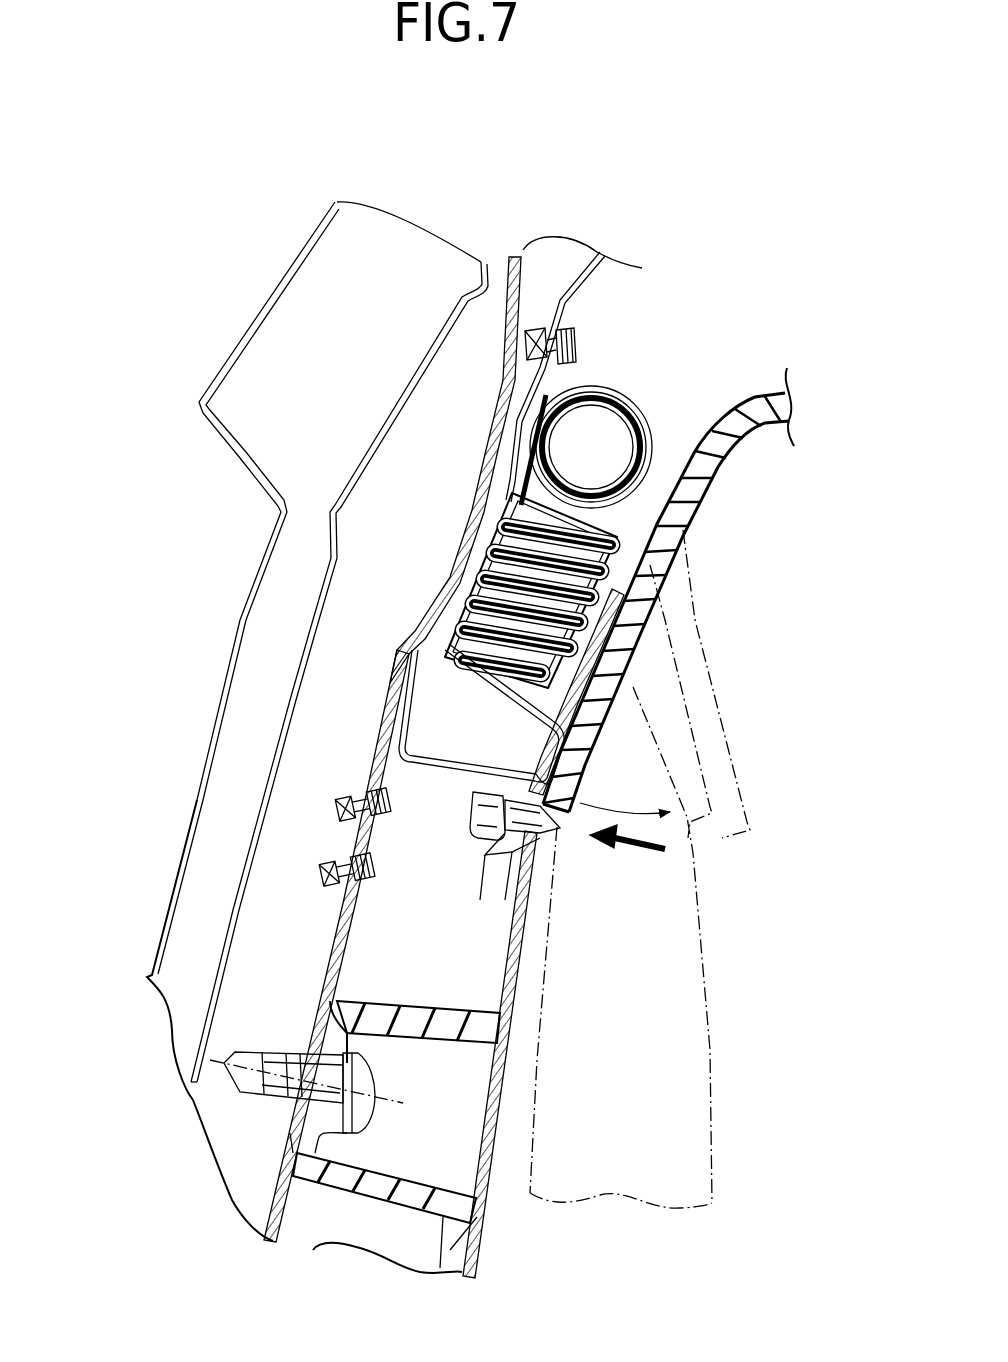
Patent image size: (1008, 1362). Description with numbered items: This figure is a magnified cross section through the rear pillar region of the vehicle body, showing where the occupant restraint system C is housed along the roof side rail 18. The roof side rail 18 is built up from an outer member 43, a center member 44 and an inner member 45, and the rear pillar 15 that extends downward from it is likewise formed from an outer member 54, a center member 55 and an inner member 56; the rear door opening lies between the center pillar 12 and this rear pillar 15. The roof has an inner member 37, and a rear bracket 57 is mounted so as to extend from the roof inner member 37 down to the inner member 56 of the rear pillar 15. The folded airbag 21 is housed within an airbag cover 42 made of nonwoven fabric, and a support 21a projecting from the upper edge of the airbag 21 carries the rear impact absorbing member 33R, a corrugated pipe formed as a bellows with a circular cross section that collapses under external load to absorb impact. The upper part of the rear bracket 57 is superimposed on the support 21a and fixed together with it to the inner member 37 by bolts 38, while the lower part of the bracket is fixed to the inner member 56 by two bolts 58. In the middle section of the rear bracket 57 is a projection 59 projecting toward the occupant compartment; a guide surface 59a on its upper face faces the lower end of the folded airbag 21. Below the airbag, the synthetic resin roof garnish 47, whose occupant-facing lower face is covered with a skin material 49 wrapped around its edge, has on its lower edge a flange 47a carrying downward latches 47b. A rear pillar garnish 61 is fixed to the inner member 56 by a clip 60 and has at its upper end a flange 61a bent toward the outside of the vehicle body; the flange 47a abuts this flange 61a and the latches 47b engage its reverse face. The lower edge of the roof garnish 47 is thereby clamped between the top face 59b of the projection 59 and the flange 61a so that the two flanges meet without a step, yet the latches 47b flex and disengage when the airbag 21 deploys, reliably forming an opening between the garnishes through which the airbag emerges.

The center pillar 12 is at (645, 839).
The rear pillar 15 is at (220, 702).
The roof side rail 18 is at (280, 262).
The airbag 21 is at (606, 531).
The support 21a is at (642, 412).
The impact absorbing member 33R is at (549, 418).
The inner member of roof 37 is at (556, 247).
The bolts 38 is at (578, 344).
The airbag cover 42 is at (556, 728).
The outer member of roof side rail 43 is at (268, 300).
The center member of roof side rail 44 is at (415, 360).
The inner member of roof side rail 45 is at (503, 377).
The roof garnish 47 is at (760, 420).
The flange of roof garnish 47a is at (560, 828).
The latches 47b is at (476, 815).
The skin material 49 is at (600, 693).
The outer member of rear pillar 54 is at (170, 885).
The center member of rear pillar 55 is at (228, 963).
The inner member of rear pillar 56 is at (322, 980).
The rear bracket 57 is at (552, 392).
The bolts 58 is at (375, 876).
The projection 59 is at (428, 758).
The guide surface 59a is at (520, 697).
The top face of projection 59b is at (578, 782).
The clip 60 is at (372, 1078).
The rear pillar garnish 61 is at (509, 1108).
The flange of rear pillar garnish 61a is at (510, 845).
The occupant restraint system C is at (656, 467).